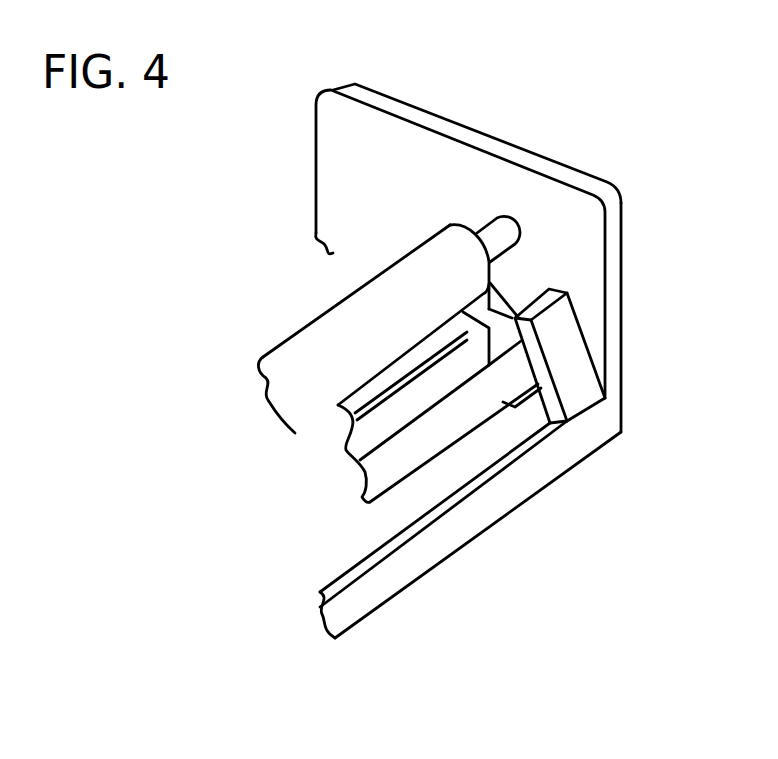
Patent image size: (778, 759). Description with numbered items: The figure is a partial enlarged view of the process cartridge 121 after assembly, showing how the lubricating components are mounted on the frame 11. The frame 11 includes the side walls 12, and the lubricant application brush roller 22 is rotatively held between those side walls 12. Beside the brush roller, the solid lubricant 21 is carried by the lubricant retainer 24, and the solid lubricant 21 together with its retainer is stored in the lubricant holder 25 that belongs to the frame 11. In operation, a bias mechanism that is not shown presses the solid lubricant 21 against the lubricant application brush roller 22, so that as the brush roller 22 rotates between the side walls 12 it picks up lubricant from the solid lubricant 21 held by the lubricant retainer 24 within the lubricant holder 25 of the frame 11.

The frame 11 is at (573, 455).
The side wall 12 is at (563, 170).
The process cartridge 121 is at (463, 114).
The solid lubricant 21 is at (348, 448).
The lubricant application brush roller 22 is at (317, 323).
The lubricant retainer 24 is at (370, 490).
The lubricant holder 25 is at (500, 440).